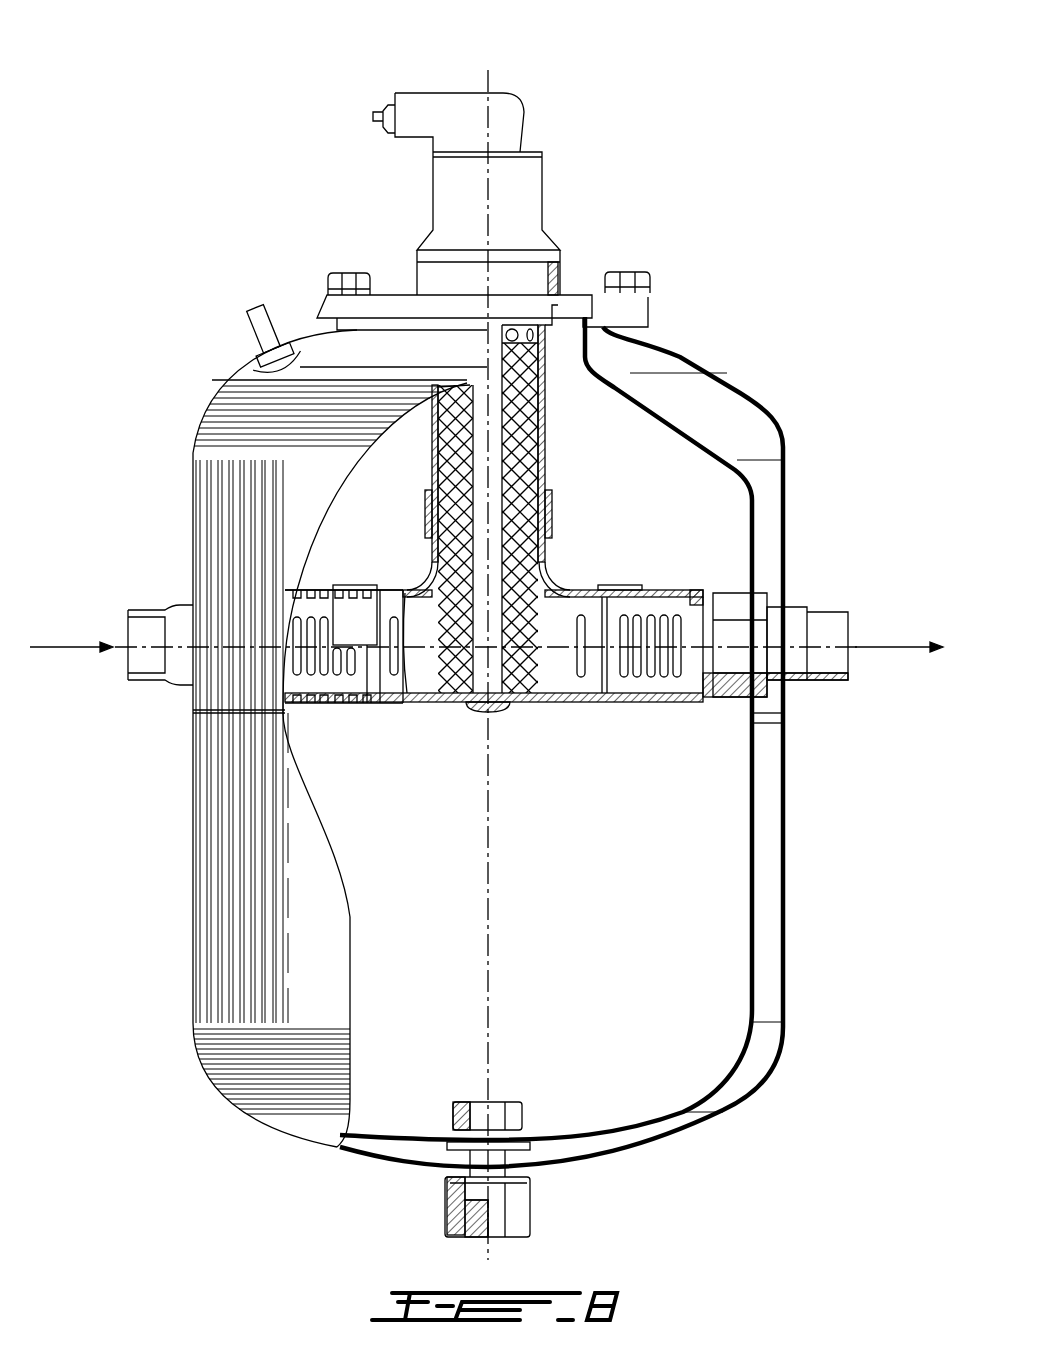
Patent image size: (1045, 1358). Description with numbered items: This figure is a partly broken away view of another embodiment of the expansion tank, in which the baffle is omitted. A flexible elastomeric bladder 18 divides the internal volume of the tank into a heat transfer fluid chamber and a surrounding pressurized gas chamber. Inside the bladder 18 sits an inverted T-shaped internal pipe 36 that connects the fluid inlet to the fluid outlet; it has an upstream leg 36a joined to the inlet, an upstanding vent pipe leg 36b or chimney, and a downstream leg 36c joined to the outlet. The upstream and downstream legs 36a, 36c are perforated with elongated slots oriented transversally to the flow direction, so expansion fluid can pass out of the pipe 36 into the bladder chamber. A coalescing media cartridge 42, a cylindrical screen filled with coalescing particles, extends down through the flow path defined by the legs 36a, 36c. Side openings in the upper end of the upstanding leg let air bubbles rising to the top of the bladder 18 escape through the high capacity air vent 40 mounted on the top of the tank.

The flexible elastomeric bladder 18 is at (713, 443).
The high capacity air vent 40 is at (523, 112).
The coalescing media cartridge 42 is at (432, 458).
The internal pipe 36 is at (539, 725).
The upstream leg 36a is at (355, 583).
The upstanding vent pipe leg 36b is at (677, 593).
The downstream leg 36c is at (545, 420).